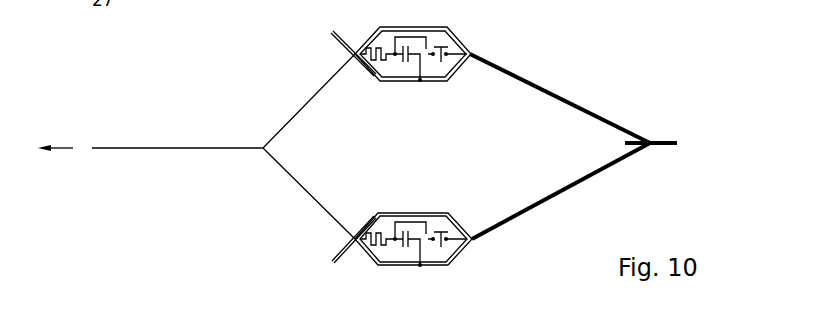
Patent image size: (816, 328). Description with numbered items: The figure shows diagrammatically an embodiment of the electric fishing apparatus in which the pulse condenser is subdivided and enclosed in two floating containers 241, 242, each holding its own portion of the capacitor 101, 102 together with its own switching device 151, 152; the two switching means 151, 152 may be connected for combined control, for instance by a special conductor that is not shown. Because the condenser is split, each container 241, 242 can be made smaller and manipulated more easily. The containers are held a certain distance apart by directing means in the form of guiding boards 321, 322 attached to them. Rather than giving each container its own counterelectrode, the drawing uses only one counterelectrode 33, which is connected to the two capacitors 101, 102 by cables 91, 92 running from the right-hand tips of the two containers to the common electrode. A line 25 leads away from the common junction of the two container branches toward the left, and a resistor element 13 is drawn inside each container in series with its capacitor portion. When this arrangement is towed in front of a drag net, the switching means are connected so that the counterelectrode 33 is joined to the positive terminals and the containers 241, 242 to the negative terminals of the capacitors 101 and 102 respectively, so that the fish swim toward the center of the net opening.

The output line 25 is at (195, 147).
The counterelectrode 33 is at (657, 147).
The resistor element 13 is at (380, 60).
The container 241 is at (403, 27).
The container 242 is at (397, 213).
The capacitor 101 is at (407, 63).
The capacitor 102 is at (408, 252).
The switching device 151 is at (448, 53).
The switching device 152 is at (447, 240).
The guiding board 321 is at (335, 27).
The guiding board 322 is at (339, 264).
The cable 91 is at (533, 82).
The cable 92 is at (552, 198).